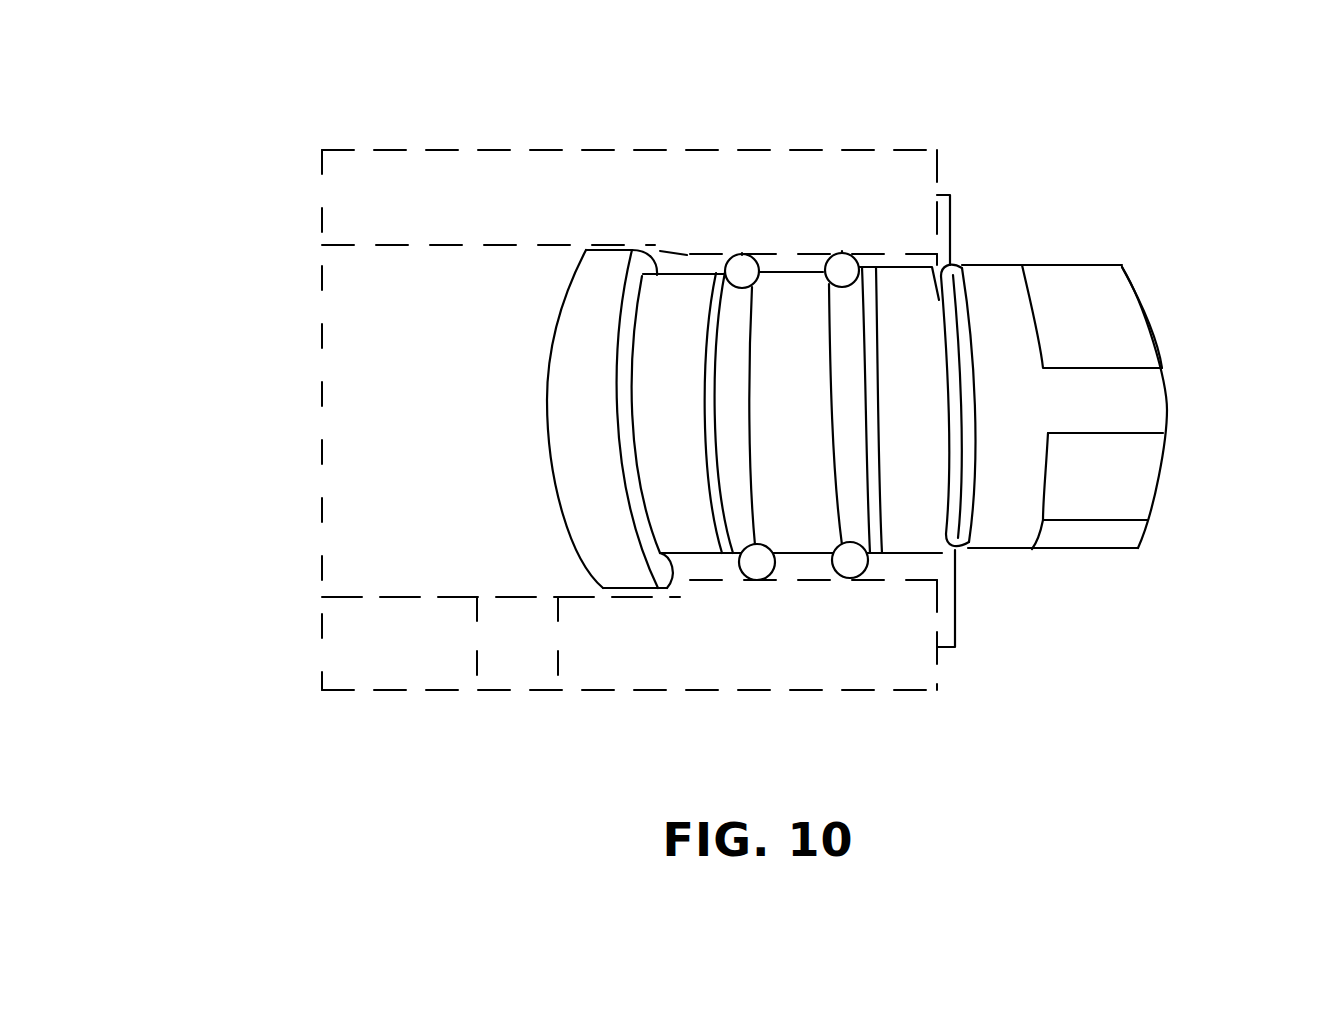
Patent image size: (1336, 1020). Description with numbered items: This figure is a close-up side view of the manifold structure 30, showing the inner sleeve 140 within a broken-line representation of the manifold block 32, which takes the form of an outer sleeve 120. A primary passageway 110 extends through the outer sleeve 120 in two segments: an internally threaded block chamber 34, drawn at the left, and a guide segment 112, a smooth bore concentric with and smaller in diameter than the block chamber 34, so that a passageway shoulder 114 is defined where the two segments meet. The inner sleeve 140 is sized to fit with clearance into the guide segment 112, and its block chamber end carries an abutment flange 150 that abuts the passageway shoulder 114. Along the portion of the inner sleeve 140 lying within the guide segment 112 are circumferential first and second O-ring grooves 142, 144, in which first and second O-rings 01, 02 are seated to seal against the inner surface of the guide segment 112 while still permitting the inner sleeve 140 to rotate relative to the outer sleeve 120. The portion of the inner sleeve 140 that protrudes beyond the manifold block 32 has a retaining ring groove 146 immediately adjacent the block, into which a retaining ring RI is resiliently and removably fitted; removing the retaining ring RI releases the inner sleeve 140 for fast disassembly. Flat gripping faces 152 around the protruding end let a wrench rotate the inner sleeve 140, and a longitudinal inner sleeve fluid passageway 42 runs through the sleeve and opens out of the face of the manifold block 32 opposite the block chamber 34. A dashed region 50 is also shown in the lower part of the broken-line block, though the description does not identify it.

The manifold structure 30 is at (1013, 90).
The manifold block 32 is at (418, 185).
The block chamber 34 is at (432, 325).
The inner sleeve fluid passageway 42 is at (1167, 410).
The control module 50 is at (562, 663).
The primary passageway 110 is at (431, 410).
The guide segment 112 is at (788, 267).
The passageway shoulder 114 is at (660, 251).
The outer sleeve 120 is at (532, 192).
The inner sleeve 140 is at (657, 303).
The first O-ring groove 142 is at (758, 276).
The second O-ring groove 144 is at (857, 280).
The retaining ring groove 146 is at (958, 425).
The abutment flange 150 is at (597, 510).
The flat gripping faces 152 is at (1063, 300).
The first O-ring 01 is at (744, 253).
The second O-ring 02 is at (843, 252).
The retaining ring RI is at (950, 222).